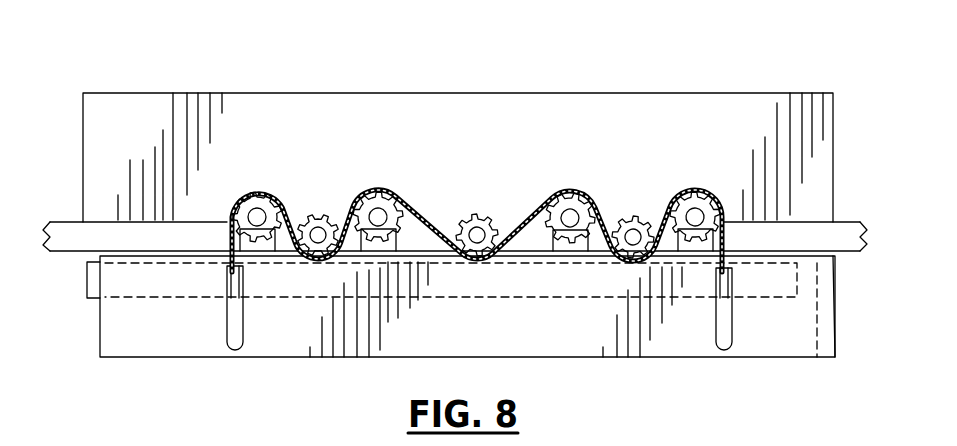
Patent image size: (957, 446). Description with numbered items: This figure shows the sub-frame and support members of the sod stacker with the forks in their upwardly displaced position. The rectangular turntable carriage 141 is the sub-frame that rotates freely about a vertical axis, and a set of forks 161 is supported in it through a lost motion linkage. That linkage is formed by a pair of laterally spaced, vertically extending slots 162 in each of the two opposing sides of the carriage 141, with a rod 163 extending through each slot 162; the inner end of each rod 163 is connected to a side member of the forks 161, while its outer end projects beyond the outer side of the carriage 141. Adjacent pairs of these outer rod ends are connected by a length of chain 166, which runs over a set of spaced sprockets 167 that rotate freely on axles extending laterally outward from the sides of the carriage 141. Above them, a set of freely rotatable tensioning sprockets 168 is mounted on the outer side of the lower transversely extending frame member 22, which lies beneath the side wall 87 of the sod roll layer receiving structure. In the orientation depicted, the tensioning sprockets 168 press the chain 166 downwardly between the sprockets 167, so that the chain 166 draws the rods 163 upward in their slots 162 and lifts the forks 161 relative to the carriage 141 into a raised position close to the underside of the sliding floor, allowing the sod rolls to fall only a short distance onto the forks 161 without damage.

The lower transversely extending member 22 is at (70, 230).
The side wall 87 is at (635, 103).
The turntable carriage 141 is at (788, 347).
The forks 161 is at (580, 310).
The slot 162 is at (233, 347).
The rod 163 is at (240, 268).
The chain 166 is at (592, 203).
The sprocket 167 is at (260, 192).
The tensioning sprocket 168 is at (320, 213).